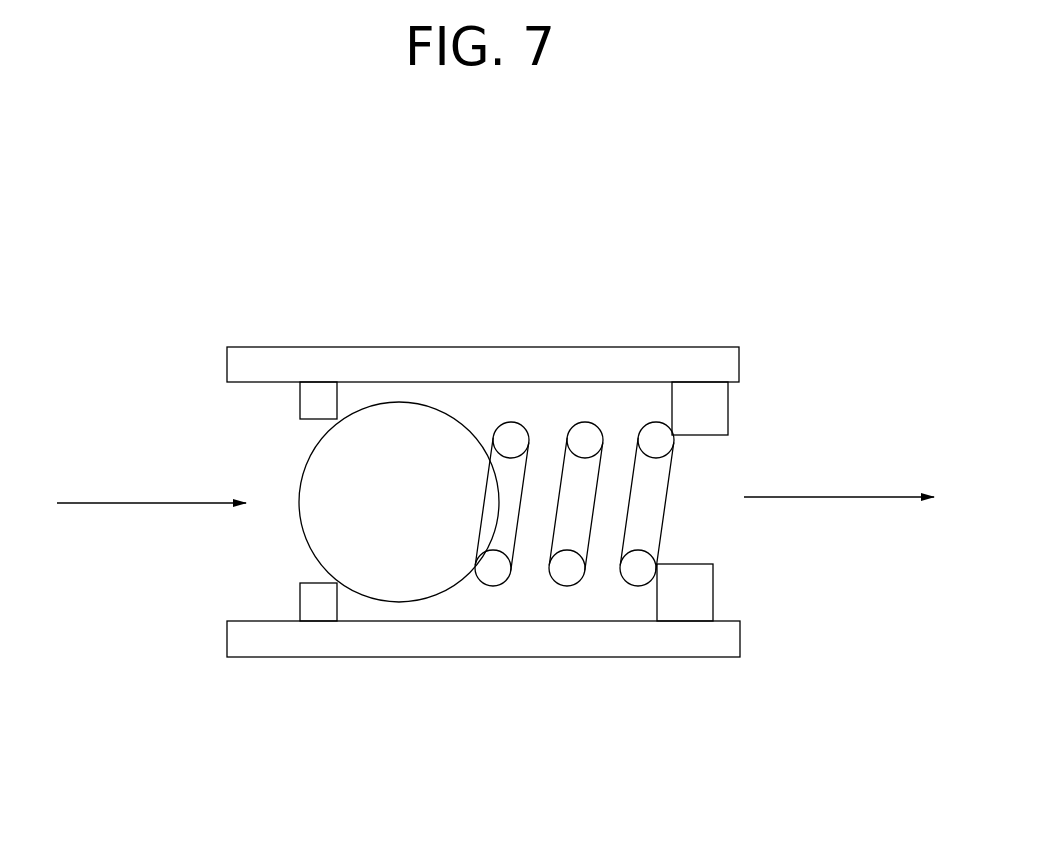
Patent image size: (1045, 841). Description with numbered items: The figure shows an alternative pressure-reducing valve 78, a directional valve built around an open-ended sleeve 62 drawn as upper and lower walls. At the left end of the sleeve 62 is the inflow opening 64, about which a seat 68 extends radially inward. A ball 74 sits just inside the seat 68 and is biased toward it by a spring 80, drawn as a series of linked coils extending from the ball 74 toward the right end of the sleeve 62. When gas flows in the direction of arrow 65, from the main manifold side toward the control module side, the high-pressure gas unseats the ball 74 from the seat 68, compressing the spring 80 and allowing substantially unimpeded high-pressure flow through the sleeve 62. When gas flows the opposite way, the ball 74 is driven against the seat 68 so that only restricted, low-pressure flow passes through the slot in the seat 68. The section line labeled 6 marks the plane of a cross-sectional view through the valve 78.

The section line 6- 6 is at (318, 163).
The open-ended sleeve 62 is at (585, 657).
The inflow opening 64 is at (220, 562).
The arrow 65 is at (120, 502).
The seat 68 is at (300, 420).
The ball 74 is at (452, 413).
The alternative pressure-reducing valve 78 is at (648, 224).
The spring 80 is at (667, 507).